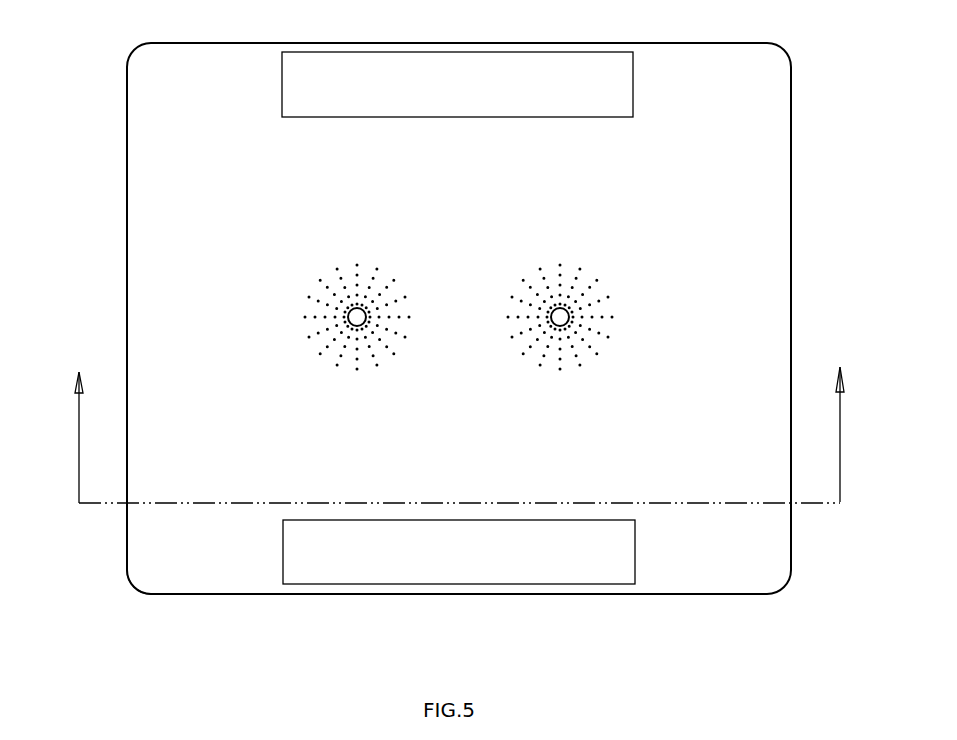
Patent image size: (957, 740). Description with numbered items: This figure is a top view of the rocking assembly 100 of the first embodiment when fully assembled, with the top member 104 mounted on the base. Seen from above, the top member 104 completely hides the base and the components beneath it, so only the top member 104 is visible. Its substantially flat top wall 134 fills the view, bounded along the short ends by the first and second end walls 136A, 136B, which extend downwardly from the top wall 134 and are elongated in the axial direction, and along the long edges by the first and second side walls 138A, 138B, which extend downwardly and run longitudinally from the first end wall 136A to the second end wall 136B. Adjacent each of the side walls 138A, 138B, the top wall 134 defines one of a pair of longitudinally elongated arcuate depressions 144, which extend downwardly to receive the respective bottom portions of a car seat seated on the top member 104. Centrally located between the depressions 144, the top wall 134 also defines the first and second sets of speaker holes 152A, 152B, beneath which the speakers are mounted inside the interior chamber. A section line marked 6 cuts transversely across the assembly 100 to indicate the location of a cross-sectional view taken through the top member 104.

The rocking assembly 100 is at (790, 594).
The top member 104 is at (133, 583).
The top wall 134 is at (398, 199).
The first end wall 136A is at (127, 204).
The second end wall 136B is at (791, 235).
The first side wall 138A is at (496, 43).
The second side wall 138B is at (600, 594).
The arcuate depressions 144 is at (572, 100).
The first set of speaker holes 152A is at (379, 265).
The second set of speaker holes 152B is at (584, 265).
The section line 6- 6 is at (456, 422).